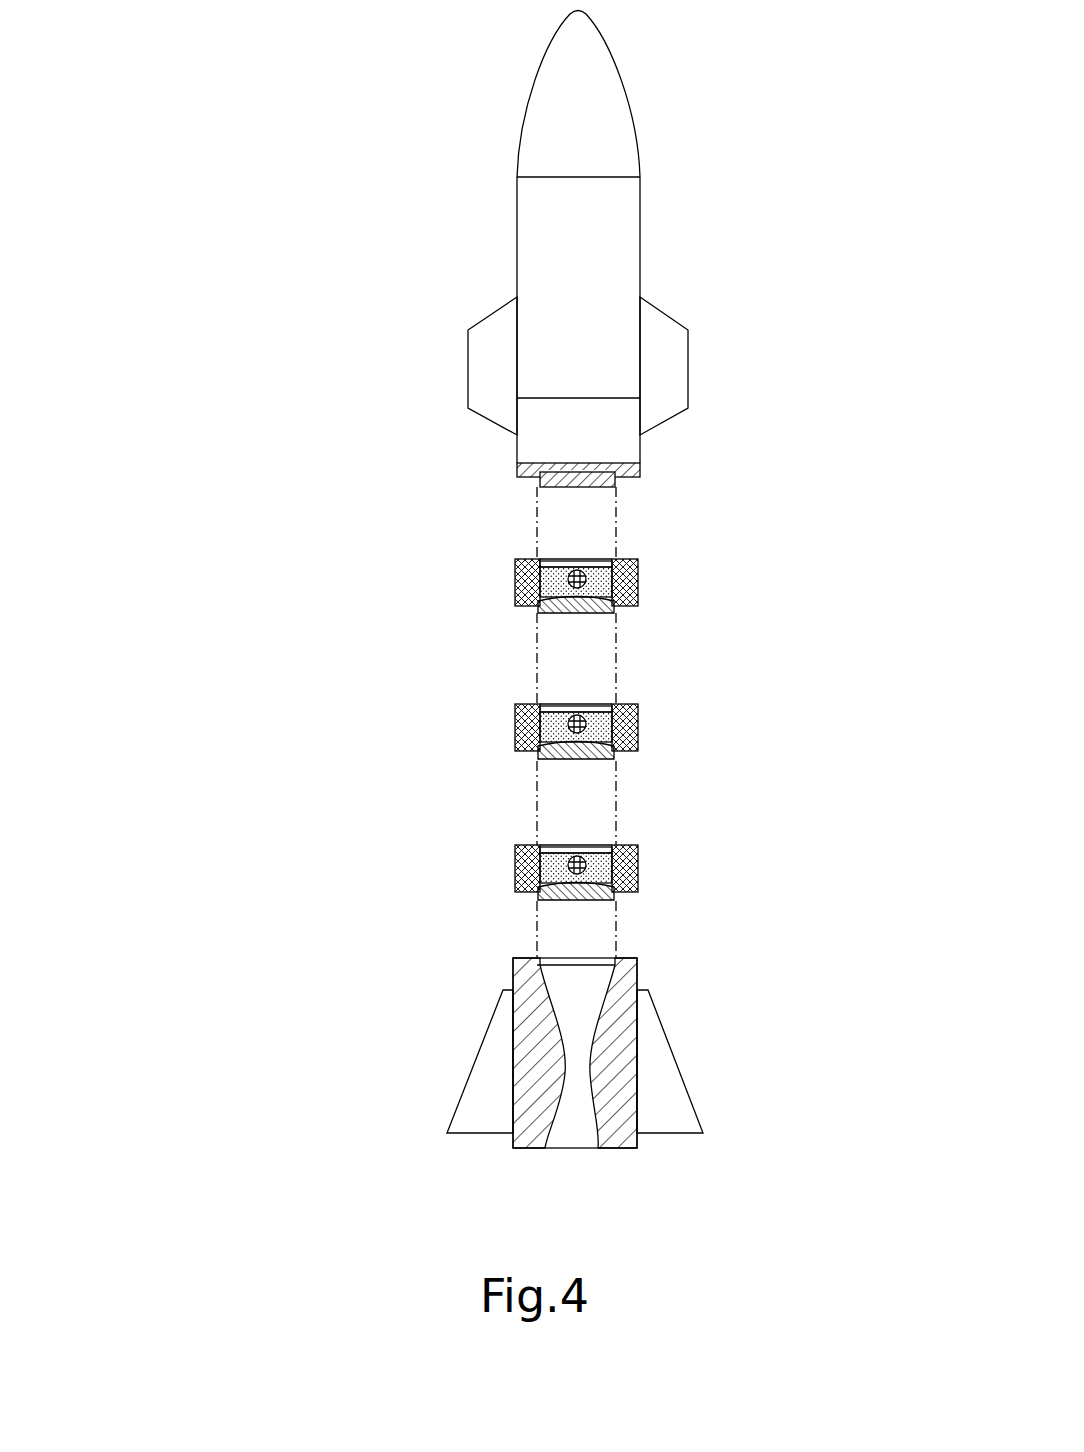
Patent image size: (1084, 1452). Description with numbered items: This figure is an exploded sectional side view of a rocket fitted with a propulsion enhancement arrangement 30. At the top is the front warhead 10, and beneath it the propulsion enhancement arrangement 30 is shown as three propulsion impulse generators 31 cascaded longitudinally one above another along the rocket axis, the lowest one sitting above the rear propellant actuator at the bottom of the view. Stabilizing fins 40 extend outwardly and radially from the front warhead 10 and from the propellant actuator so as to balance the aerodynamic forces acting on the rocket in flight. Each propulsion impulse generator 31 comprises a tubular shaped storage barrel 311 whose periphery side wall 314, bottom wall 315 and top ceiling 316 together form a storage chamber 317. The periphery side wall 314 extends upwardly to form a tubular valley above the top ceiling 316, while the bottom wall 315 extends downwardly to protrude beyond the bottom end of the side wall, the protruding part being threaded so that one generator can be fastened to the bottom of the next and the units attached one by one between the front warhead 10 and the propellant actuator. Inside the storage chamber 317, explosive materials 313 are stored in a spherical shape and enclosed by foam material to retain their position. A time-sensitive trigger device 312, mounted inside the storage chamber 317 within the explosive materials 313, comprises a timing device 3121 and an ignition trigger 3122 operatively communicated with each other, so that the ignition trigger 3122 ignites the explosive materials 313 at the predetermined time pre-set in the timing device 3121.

The front warhead 10 is at (585, 112).
The stabilizing fins 40 is at (663, 310).
The propulsion enhancement arrangement 30 is at (283, 667).
The propulsion impulse generator 31 is at (546, 693).
The storage barrel 311 is at (652, 725).
The time-sensitive trigger device 312 is at (580, 556).
The timing device 3121 is at (638, 577).
The ignition trigger 3122 is at (592, 570).
The explosive materials 313 is at (585, 857).
The periphery side wall 314 is at (515, 560).
The bottom wall 315 is at (615, 612).
The top ceiling 316 is at (550, 848).
The storage chamber 317 is at (515, 572).